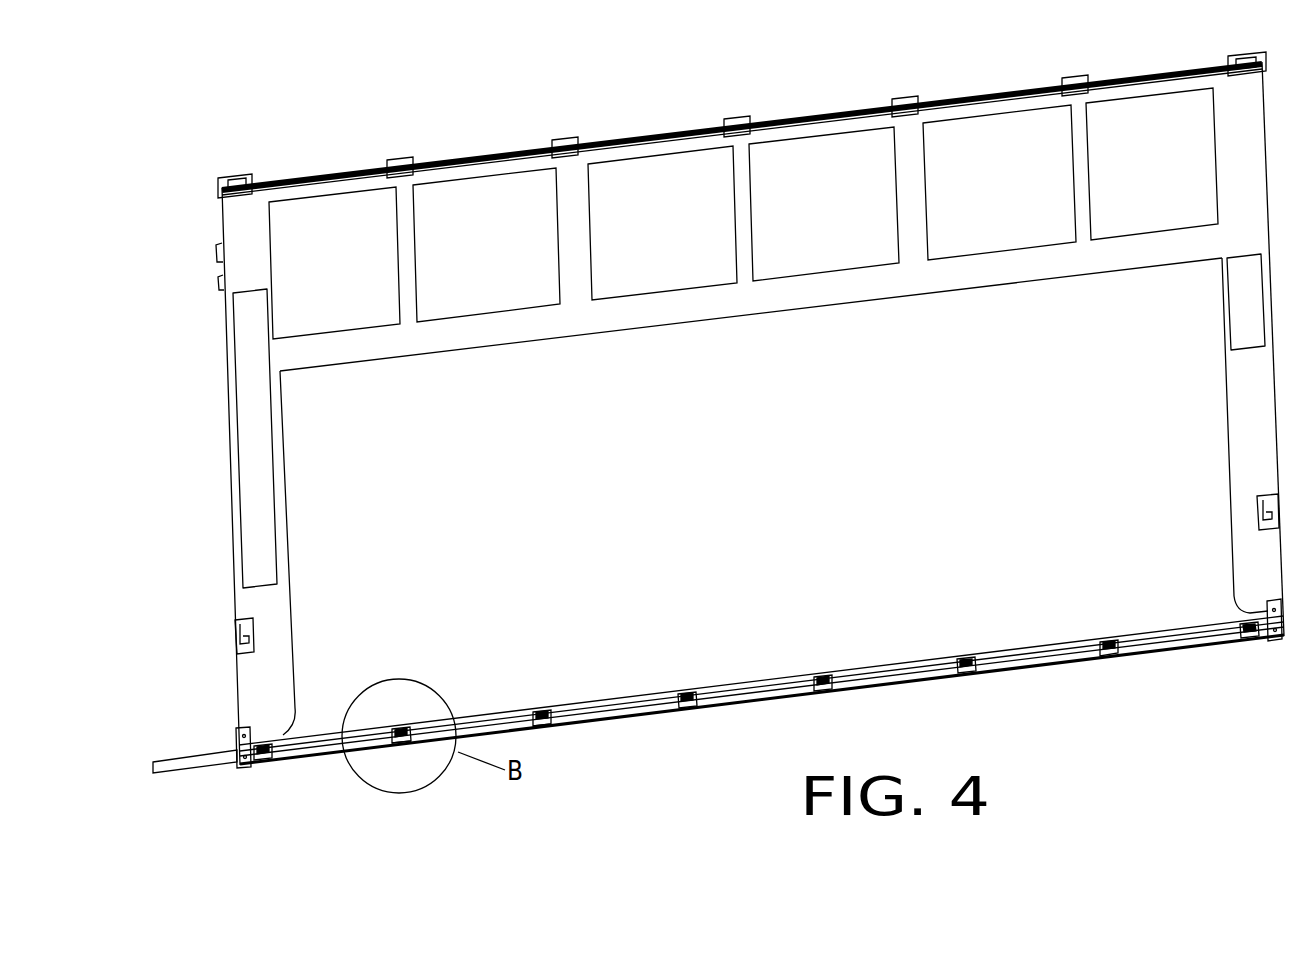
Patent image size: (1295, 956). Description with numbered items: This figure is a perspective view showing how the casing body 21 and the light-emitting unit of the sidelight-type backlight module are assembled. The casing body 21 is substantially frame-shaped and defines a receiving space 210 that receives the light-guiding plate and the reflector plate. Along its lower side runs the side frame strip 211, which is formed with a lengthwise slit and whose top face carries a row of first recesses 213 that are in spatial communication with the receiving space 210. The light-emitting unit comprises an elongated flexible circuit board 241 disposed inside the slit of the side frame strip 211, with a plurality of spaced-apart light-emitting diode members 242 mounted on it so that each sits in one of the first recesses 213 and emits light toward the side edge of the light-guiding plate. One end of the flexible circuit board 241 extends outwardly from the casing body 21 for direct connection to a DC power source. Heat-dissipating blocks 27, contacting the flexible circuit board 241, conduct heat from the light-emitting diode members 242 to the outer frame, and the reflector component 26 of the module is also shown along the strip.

The casing body 21 is at (792, 130).
The receiving space 210 is at (325, 445).
The side frame strip 211 is at (752, 698).
The first recesses 213 is at (395, 727).
The flexible circuit board 241 is at (207, 760).
The light-emitting diode members 242 is at (405, 740).
The reflector component 26 is at (725, 687).
The heat-dissipating blocks 27 is at (405, 745).